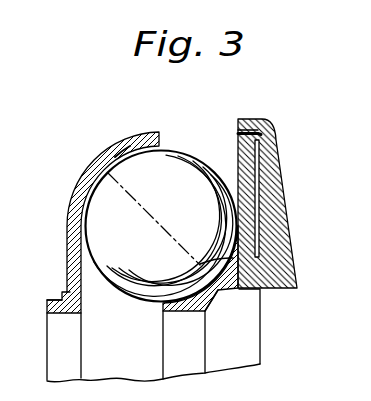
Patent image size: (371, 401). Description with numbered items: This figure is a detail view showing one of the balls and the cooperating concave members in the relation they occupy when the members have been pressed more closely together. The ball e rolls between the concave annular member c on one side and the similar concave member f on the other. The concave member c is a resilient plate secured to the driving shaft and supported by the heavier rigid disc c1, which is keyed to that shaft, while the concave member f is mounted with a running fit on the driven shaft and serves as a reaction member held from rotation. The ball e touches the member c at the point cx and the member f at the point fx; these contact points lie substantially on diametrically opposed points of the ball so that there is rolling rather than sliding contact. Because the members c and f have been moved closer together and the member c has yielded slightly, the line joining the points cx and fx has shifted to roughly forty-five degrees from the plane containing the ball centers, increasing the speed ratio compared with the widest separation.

The concave member f is at (70, 181).
The point of contact fx is at (115, 156).
The ball e is at (161, 226).
The rigid disc c1 is at (284, 207).
The concave annular member c is at (222, 292).
The point of contact cx is at (206, 292).